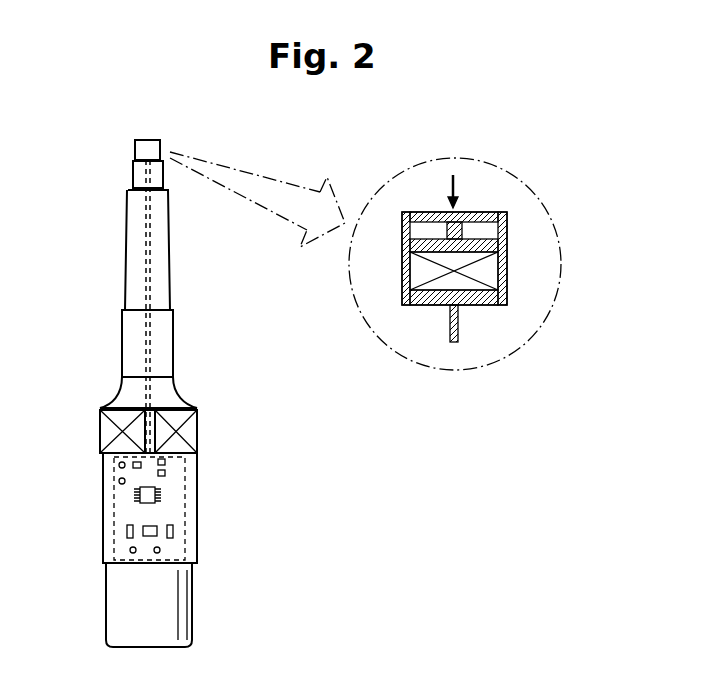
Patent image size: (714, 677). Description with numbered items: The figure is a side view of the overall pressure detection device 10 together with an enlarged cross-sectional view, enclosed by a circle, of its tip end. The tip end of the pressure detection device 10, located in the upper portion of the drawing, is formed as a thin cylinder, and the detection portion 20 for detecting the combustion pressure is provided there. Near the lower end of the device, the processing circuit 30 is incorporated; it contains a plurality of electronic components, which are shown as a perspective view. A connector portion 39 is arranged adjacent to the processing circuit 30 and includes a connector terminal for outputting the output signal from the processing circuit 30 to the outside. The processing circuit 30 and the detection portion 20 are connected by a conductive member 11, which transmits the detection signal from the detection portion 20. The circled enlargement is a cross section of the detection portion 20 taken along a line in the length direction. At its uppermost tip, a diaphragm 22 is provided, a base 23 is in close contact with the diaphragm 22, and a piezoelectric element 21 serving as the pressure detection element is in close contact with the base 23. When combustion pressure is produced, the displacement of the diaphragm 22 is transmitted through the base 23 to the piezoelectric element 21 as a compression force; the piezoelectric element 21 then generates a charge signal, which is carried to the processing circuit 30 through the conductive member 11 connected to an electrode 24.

The pressure detection device 10 is at (200, 384).
The conductive member 11 is at (128, 281).
The detection portion 20 is at (135, 152).
The piezoelectric element 21 is at (503, 268).
The diaphragm 22 is at (478, 212).
The base 23 is at (497, 241).
The electrode 24 is at (480, 305).
The processing circuit 30 is at (185, 520).
The connector portion 39 is at (193, 605).